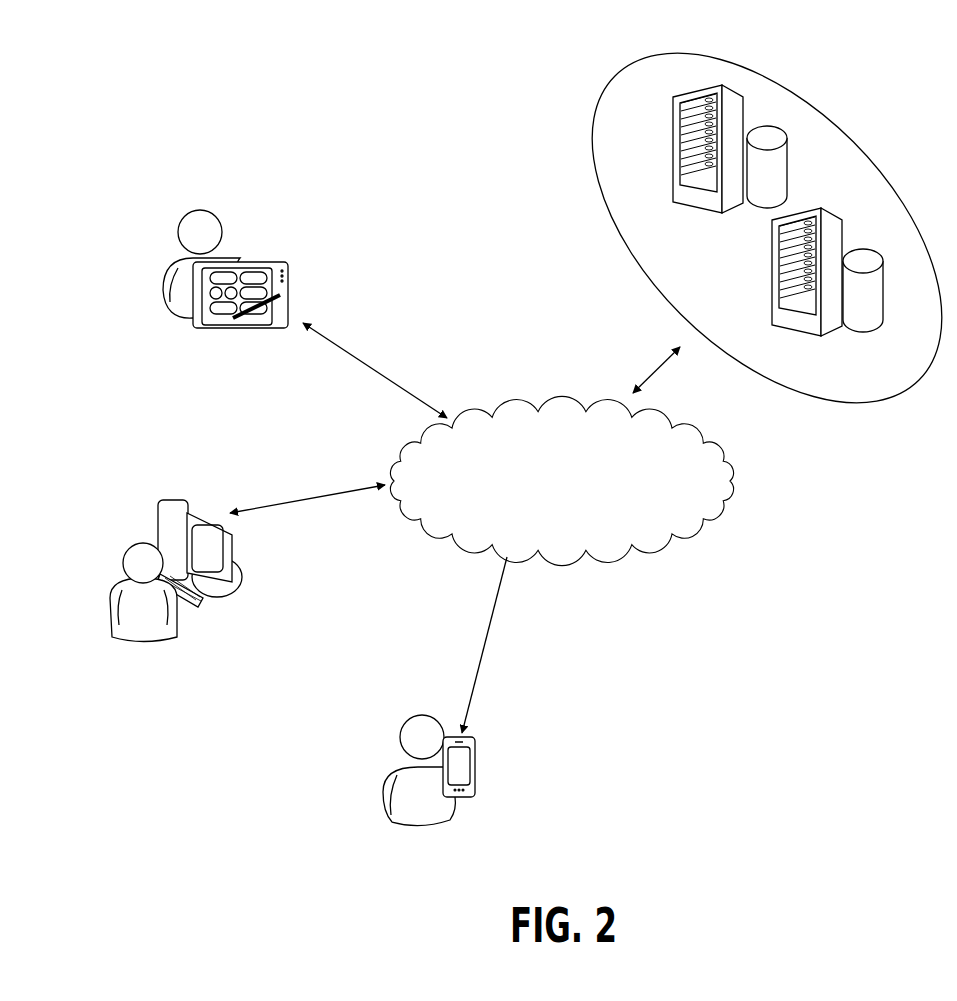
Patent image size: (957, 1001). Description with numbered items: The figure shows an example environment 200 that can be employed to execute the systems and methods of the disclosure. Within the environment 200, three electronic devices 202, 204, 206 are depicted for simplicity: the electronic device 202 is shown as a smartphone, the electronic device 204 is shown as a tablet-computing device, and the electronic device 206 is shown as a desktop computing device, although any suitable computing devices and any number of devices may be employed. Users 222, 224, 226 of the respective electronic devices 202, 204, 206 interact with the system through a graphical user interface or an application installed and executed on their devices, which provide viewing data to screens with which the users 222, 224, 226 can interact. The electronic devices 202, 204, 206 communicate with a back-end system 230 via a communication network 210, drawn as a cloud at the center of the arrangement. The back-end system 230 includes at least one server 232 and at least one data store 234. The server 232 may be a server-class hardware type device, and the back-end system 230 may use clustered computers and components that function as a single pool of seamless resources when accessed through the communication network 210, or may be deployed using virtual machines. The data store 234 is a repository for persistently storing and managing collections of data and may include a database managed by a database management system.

The example environment 200 is at (345, 118).
The electronic device 202 is at (477, 782).
The electronic device 204 is at (233, 550).
The electronic device 206 is at (260, 262).
The communication network 210 is at (580, 507).
The user 222 is at (387, 767).
The user 224 is at (137, 542).
The user 226 is at (170, 262).
The back-end system 230 is at (838, 127).
The server 232 is at (700, 90).
The data store 234 is at (770, 125).